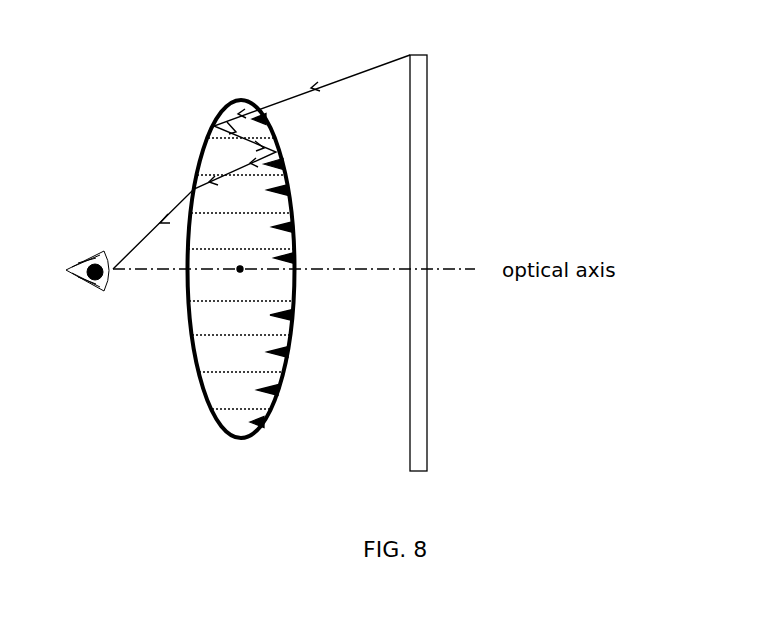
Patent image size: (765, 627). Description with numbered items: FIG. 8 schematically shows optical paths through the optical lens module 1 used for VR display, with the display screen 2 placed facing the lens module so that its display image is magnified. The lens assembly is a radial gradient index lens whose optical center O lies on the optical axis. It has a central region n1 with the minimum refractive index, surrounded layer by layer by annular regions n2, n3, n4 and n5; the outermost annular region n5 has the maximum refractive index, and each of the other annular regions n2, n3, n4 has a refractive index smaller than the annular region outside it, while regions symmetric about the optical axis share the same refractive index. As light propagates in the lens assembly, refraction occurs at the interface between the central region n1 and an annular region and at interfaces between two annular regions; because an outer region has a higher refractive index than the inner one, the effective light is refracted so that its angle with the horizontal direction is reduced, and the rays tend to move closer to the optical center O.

The optical lens module 1 is at (208, 137).
The display screen 2 is at (427, 112).
The optical center O is at (238, 283).
The central region n1 is at (293, 258).
The annular region n2 is at (292, 227).
The annular region n3 is at (287, 190).
The annular region n4 is at (282, 164).
The annular region n5 is at (265, 119).